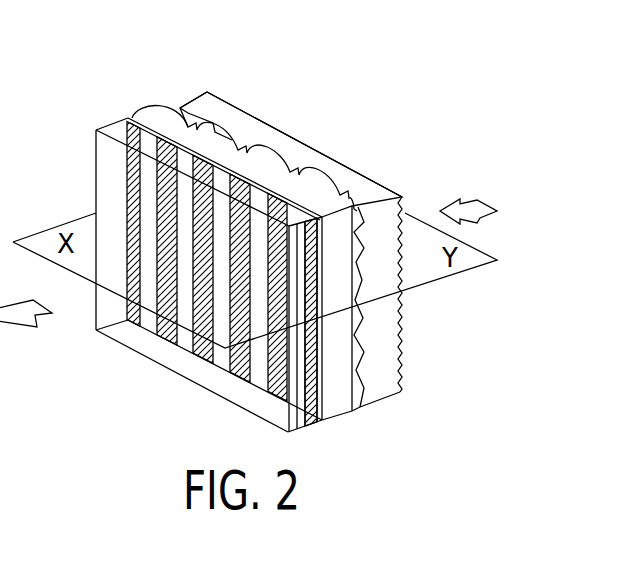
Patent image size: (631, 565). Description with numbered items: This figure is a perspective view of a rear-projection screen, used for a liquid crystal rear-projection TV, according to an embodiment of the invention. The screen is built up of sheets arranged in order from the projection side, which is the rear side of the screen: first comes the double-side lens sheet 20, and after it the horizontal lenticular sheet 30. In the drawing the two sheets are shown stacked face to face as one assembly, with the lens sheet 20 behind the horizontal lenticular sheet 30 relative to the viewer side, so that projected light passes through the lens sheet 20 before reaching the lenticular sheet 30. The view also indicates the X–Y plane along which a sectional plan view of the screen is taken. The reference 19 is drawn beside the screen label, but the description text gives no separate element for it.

The horizontal lenticular sheet 30 is at (121, 97).
The double-side lens sheet 20 is at (190, 72).
The lens sheet (19, A1) 19 is at (260, 60).